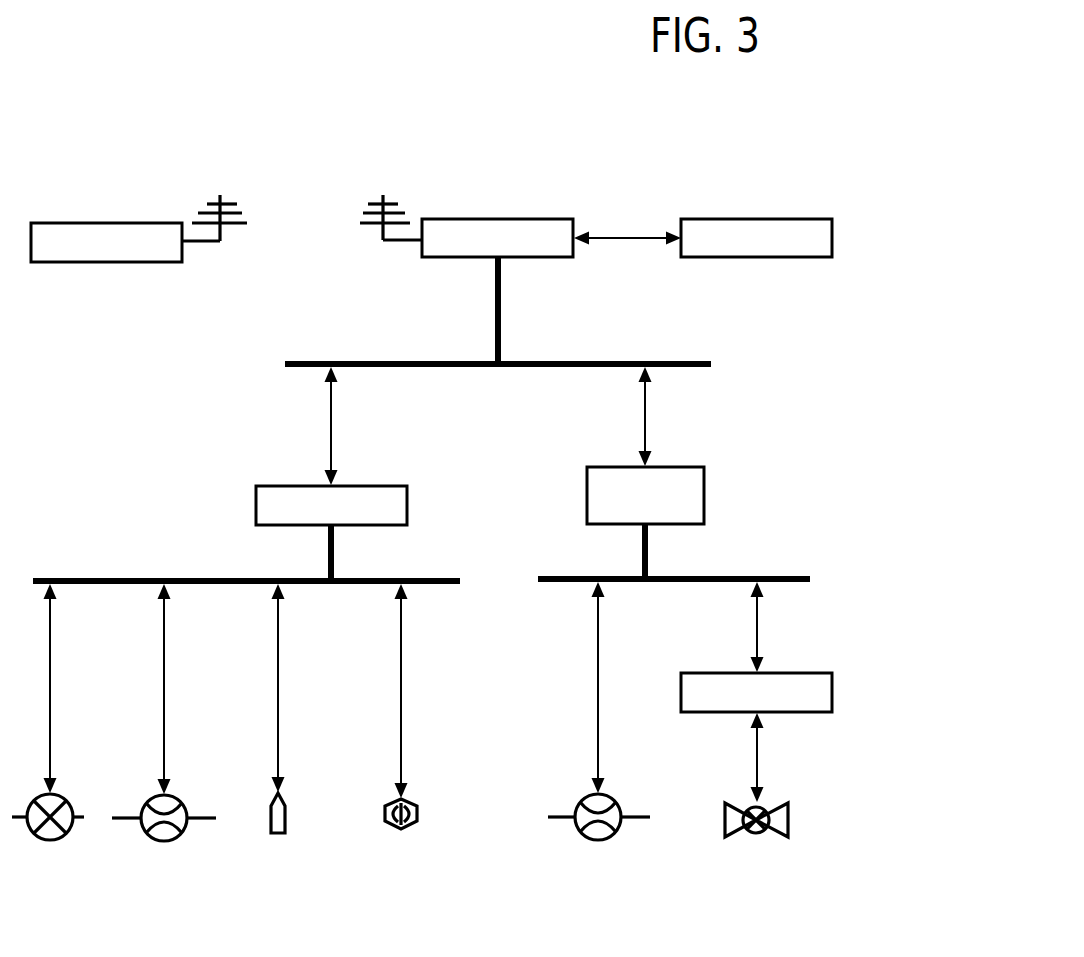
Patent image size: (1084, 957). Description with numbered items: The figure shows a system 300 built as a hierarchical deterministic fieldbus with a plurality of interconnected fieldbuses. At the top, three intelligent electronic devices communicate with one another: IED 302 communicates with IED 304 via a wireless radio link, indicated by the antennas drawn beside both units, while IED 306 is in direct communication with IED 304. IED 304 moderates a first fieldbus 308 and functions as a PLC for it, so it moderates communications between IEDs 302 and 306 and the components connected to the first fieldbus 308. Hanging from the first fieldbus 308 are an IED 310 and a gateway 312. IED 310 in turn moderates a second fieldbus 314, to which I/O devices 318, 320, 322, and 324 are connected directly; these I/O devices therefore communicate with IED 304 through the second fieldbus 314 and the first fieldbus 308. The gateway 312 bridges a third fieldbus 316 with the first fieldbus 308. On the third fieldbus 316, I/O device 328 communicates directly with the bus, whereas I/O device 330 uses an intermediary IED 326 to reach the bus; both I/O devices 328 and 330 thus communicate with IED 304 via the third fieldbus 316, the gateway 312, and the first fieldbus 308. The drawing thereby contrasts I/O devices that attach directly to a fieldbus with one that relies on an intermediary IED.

The system 300 is at (96, 131).
The IED 302 is at (102, 222).
The IED 304 is at (496, 219).
The IED 306 is at (758, 219).
The first fieldbus 308 is at (501, 335).
The IED 310 is at (407, 487).
The gateway 312 is at (704, 483).
The second fieldbus 314 is at (405, 578).
The third fieldbus 316 is at (672, 577).
The I/O device 318 is at (50, 841).
The I/O device 320 is at (164, 842).
The I/O device 322 is at (278, 834).
The I/O device 324 is at (401, 830).
The IED 326 is at (832, 683).
The I/O device 328 is at (598, 841).
The I/O device 330 is at (756, 838).